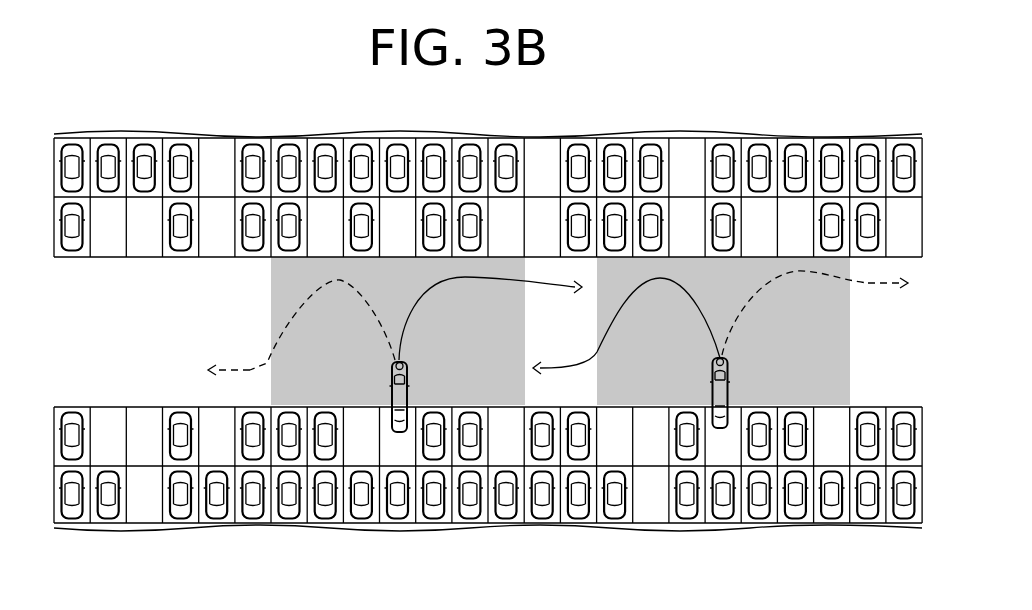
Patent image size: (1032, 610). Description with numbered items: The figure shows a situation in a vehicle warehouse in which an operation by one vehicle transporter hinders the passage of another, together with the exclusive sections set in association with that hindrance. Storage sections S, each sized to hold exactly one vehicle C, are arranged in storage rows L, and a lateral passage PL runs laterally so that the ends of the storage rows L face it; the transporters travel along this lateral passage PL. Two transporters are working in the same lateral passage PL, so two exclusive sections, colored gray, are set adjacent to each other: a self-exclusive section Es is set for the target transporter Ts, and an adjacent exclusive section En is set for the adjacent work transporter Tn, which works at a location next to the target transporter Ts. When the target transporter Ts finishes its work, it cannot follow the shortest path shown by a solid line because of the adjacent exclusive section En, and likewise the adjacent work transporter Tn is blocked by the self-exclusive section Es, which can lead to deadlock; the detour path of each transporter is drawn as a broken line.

The storage section S is at (54, 172).
The storage row L is at (70, 275).
The lateral passage PL is at (471, 331).
The vehicle C is at (72, 410).
The target transporter Ts is at (405, 375).
The adjacent work transporter Tn is at (715, 375).
The self-exclusive section Es is at (404, 294).
The adjacent exclusive section En is at (724, 294).